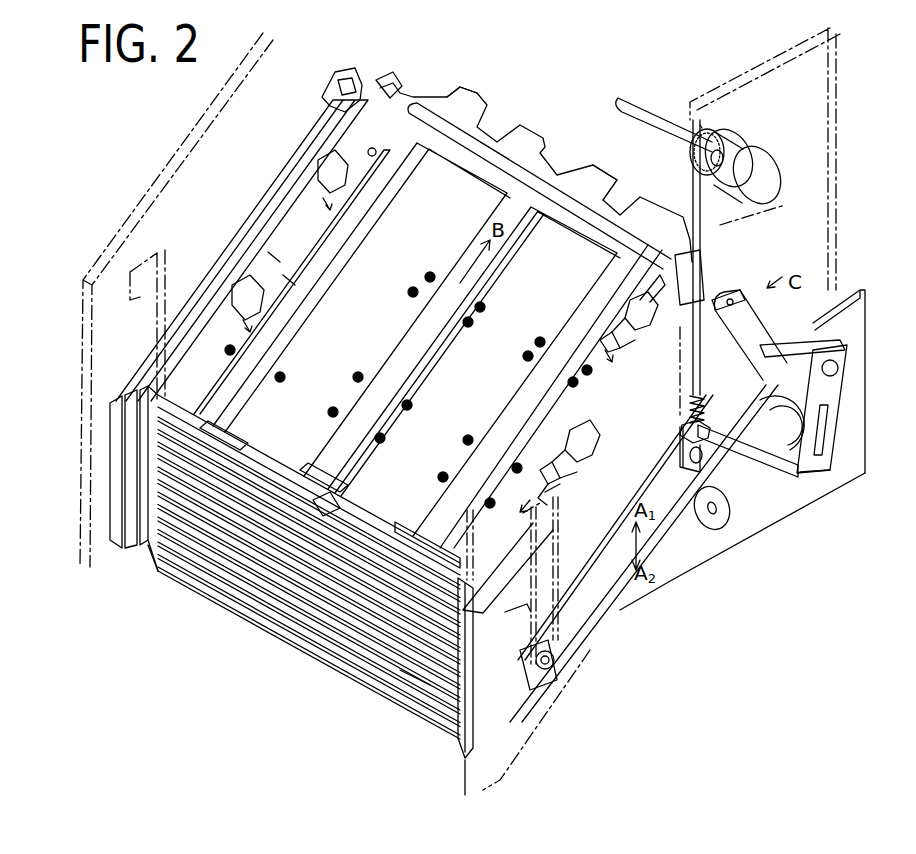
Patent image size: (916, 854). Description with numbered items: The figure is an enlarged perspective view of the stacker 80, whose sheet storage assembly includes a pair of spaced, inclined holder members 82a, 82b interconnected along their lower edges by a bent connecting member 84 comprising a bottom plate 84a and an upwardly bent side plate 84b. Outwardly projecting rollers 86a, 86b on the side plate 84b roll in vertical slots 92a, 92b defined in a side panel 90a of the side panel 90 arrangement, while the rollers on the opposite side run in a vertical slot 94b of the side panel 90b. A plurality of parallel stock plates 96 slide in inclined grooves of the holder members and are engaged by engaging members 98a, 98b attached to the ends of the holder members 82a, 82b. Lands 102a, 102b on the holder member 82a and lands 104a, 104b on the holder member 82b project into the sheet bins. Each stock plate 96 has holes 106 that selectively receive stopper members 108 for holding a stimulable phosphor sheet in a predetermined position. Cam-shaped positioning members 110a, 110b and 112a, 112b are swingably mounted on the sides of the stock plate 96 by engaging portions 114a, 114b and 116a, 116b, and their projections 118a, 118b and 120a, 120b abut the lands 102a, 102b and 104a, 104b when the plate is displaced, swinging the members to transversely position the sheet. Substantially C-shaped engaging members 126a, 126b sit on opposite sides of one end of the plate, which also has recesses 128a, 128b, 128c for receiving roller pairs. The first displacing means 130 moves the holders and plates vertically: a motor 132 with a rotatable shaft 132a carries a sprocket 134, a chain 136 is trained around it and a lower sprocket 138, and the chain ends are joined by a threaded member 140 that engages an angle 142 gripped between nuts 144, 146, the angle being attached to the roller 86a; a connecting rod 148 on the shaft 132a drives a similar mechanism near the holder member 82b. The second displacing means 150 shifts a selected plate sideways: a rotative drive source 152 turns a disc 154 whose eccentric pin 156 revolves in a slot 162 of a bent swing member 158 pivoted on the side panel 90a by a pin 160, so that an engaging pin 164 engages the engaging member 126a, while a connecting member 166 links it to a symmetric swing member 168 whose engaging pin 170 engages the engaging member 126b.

The stacker 80 is at (186, 634).
The holder member 82a is at (455, 740).
The holder member 82b is at (122, 550).
The connecting member 84 is at (630, 614).
The bottom plate 84a is at (535, 685).
The side plate 84b is at (588, 622).
The roller 86a is at (684, 470).
The roller 86b is at (556, 668).
The side panel 90 is at (594, 700).
The side panel 90a is at (738, 560).
The side panel 90b is at (172, 160).
The vertical slot 92a is at (778, 400).
The vertical slot 92b is at (525, 612).
The vertical slot 94b is at (130, 265).
The stock plate 96 is at (482, 114).
The engaging member 98a is at (423, 637).
The engaging member 98b is at (152, 550).
The land 102a is at (603, 338).
The land 102b is at (588, 452).
The land 104a is at (322, 130).
The land 104b is at (262, 226).
The hole 106 is at (433, 275).
The stopper member 108 is at (238, 438).
The positioning member 110a is at (628, 322).
The positioning member 110b is at (578, 465).
The positioning member 112a is at (392, 172).
The positioning member 112b is at (287, 280).
The engaging portion 114a is at (640, 302).
The engaging portion 114b is at (600, 438).
The engaging portion 116a is at (376, 154).
The engaging portion 116b is at (280, 258).
The projection 118a is at (690, 385).
The projection 118b is at (565, 480).
The projection 120a is at (318, 175).
The projection 120b is at (242, 292).
The engaging member 126a is at (703, 256).
The engaging member 126b is at (393, 74).
The recess 128a is at (685, 230).
The recess 128b is at (600, 155).
The recess 128c is at (457, 88).
The first displacing means 130 is at (711, 122).
The motor 132 is at (762, 158).
The rotatable shaft 132a is at (724, 152).
The sprocket 134 is at (722, 138).
The chain 136 is at (740, 220).
The sprocket 138 is at (727, 512).
The externally threaded member 140 is at (702, 458).
The angle 142 is at (688, 425).
The nut 144 is at (702, 440).
The nut 146 is at (690, 412).
The connecting rod 148 is at (640, 105).
The second displacing means 150 is at (824, 318).
The rotative drive source 152 is at (768, 348).
The disc 154 is at (788, 468).
The pin 156 is at (832, 455).
The swing member 158 is at (832, 345).
The pin 160 is at (838, 366).
The slot 162 is at (826, 430).
The engaging pin 164 is at (715, 300).
The connecting member 166 is at (813, 475).
The swing member 168 is at (335, 74).
The engaging pin 170 is at (361, 90).